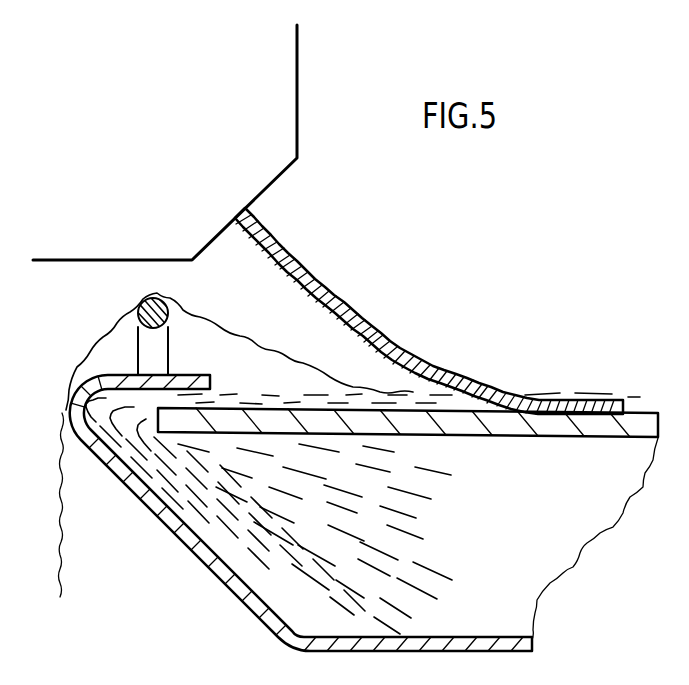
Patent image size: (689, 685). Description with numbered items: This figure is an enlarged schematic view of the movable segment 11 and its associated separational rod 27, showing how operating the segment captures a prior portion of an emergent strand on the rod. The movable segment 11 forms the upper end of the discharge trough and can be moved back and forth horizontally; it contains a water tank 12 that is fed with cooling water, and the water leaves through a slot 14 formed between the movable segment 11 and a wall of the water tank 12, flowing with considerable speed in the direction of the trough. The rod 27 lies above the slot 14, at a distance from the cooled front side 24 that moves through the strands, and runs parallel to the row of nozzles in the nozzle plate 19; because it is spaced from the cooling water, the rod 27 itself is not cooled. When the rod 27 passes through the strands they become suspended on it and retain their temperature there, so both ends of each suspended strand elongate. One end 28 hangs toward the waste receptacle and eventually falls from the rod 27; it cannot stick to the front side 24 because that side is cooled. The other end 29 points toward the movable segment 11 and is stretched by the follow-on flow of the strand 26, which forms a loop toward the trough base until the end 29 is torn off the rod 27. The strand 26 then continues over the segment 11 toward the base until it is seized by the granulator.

The movable segment 11 is at (453, 405).
The water tank 12 is at (578, 568).
The slot 14 is at (220, 387).
The nozzle plate 19 is at (273, 183).
The front side 24 is at (70, 413).
The strand 26 is at (421, 362).
The rod 27 is at (139, 313).
The end 28 is at (57, 514).
The end 29 is at (342, 385).